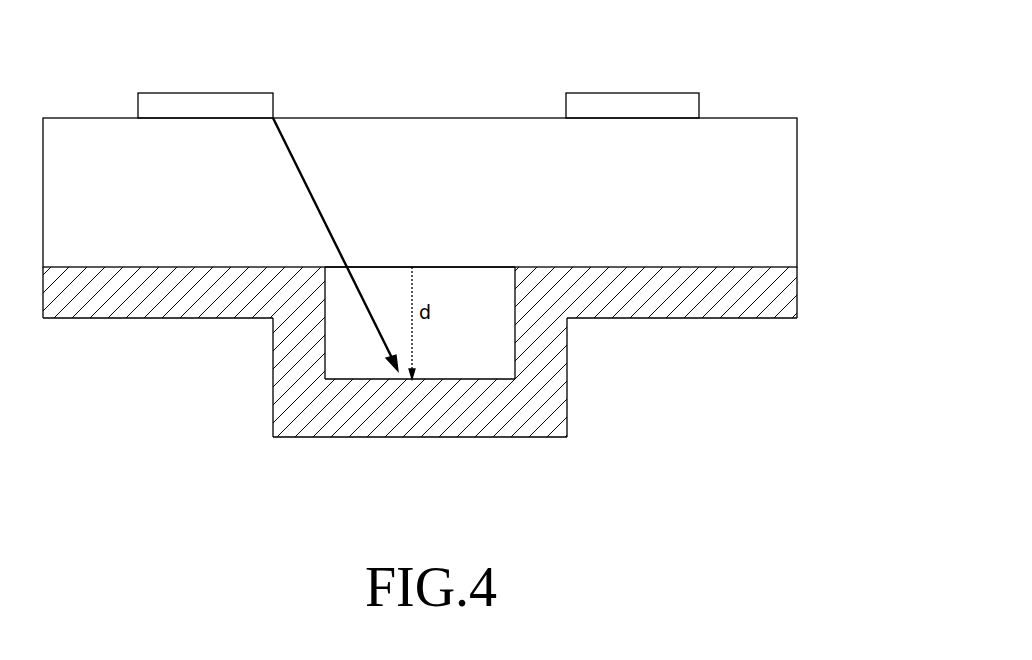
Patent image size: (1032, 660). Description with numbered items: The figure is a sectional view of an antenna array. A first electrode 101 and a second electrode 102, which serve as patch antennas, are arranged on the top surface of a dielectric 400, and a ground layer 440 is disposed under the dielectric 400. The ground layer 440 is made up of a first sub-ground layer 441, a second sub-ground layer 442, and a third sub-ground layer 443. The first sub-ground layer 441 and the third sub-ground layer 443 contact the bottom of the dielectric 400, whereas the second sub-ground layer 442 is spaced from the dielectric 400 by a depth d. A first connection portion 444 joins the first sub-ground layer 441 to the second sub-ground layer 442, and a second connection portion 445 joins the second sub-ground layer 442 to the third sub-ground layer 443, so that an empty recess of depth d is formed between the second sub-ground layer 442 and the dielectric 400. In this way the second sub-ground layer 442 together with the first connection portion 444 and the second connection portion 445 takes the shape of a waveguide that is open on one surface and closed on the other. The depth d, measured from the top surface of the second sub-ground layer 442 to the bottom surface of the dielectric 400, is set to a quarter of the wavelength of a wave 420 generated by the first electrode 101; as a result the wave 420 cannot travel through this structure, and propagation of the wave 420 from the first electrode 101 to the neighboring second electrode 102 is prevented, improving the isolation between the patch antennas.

The first electrode 101 is at (203, 92).
The second electrode 102 is at (629, 92).
The dielectric 400 is at (446, 304).
The wave 420 is at (357, 179).
The ground layer 440 is at (446, 375).
The first sub-ground layer 441 is at (273, 323).
The second sub-ground layer 442 is at (567, 446).
The third sub-ground layer 443 is at (797, 323).
The first connection portion 444 is at (303, 366).
The second connection portion 445 is at (545, 366).